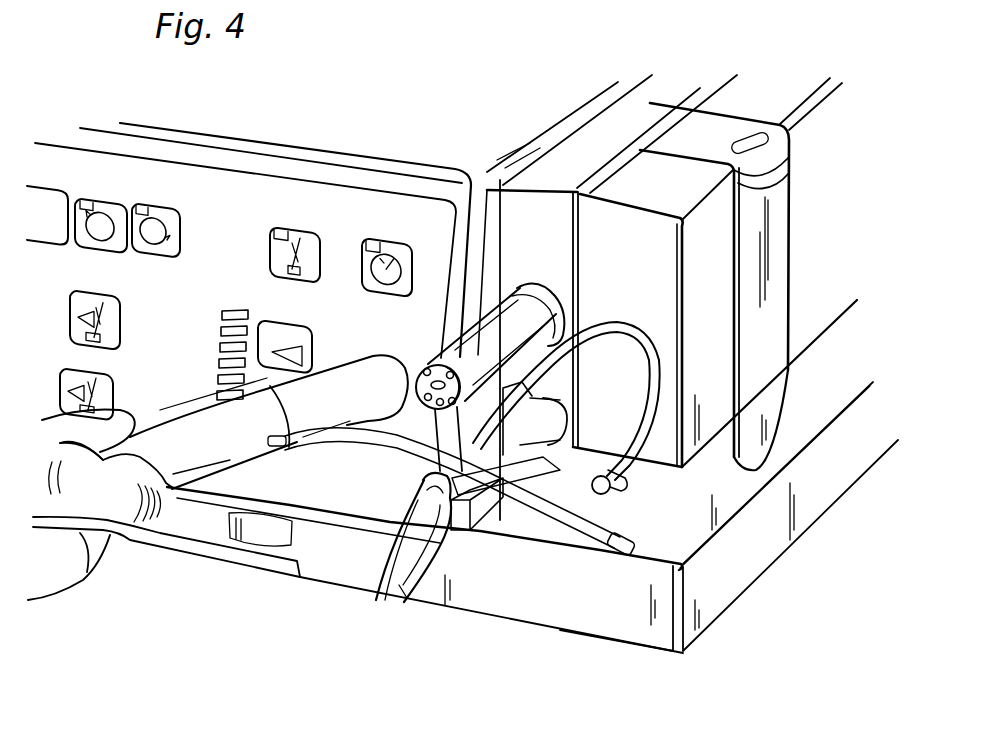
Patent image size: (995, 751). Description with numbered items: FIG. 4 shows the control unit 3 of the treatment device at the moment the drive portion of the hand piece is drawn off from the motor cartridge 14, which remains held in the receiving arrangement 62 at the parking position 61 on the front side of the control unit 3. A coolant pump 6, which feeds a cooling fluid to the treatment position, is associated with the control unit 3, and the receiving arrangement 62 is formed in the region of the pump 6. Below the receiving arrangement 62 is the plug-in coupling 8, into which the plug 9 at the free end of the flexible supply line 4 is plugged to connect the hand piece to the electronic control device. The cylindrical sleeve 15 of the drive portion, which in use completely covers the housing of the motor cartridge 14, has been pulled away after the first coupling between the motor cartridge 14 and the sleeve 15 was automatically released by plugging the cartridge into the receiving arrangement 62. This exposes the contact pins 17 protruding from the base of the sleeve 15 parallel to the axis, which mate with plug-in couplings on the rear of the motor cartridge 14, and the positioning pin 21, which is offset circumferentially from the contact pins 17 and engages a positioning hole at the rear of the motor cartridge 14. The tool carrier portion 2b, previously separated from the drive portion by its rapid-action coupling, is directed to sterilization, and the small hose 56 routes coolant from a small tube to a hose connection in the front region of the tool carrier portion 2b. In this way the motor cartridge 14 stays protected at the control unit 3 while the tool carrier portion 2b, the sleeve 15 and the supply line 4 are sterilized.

The control unit 3 is at (376, 134).
The motor cartridge 14 is at (465, 330).
The parking position 61 is at (549, 291).
The receiving arrangement 62 is at (533, 316).
The coolant pump 6 is at (800, 240).
The contact pins 17 is at (423, 370).
The positioning pin 21 is at (436, 414).
The cylindrical sleeve 15 is at (313, 410).
The tool carrier portion 2b is at (173, 487).
The supply line 4 is at (405, 594).
The plug 9 is at (527, 457).
The plug-in coupling 8 is at (559, 441).
The small hose 56 is at (610, 554).